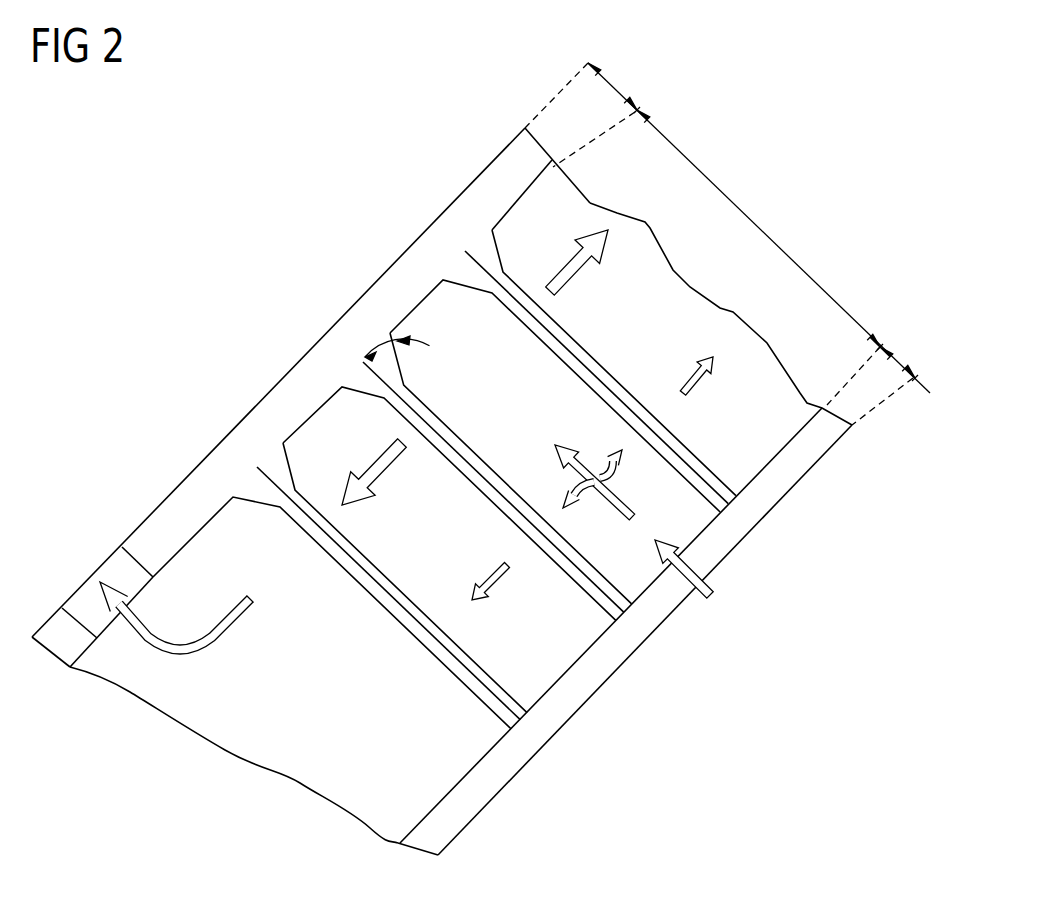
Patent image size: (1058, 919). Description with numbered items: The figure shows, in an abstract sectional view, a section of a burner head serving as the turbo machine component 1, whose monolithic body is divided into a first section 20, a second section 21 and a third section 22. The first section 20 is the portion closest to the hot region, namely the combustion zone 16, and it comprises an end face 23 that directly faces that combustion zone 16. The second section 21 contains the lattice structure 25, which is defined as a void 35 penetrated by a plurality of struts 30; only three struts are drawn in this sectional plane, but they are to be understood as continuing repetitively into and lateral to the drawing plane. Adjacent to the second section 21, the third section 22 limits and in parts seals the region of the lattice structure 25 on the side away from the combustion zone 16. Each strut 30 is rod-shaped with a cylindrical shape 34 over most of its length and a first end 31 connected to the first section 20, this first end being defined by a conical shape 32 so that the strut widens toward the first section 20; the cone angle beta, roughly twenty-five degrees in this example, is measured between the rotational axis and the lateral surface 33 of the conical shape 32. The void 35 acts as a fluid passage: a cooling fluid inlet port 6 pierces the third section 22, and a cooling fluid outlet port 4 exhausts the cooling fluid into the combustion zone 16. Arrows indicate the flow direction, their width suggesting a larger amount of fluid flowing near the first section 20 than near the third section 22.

The turbo machine component 1 is at (729, 143).
The cooling fluid outlet port 4 is at (147, 562).
The cooling fluid inlet port 6 is at (687, 558).
The combustion zone 16 is at (190, 259).
The first section 20 is at (606, 80).
The second section 21 is at (752, 222).
The third section 22 is at (892, 360).
The end face 23 is at (306, 350).
The lattice structure 25 is at (303, 678).
The strut 30 is at (683, 453).
The first end 31 is at (257, 487).
The conical shape 32 is at (275, 470).
The lateral surface 33 is at (263, 507).
The cylindrical shape 34 is at (420, 640).
The void 35 is at (446, 554).